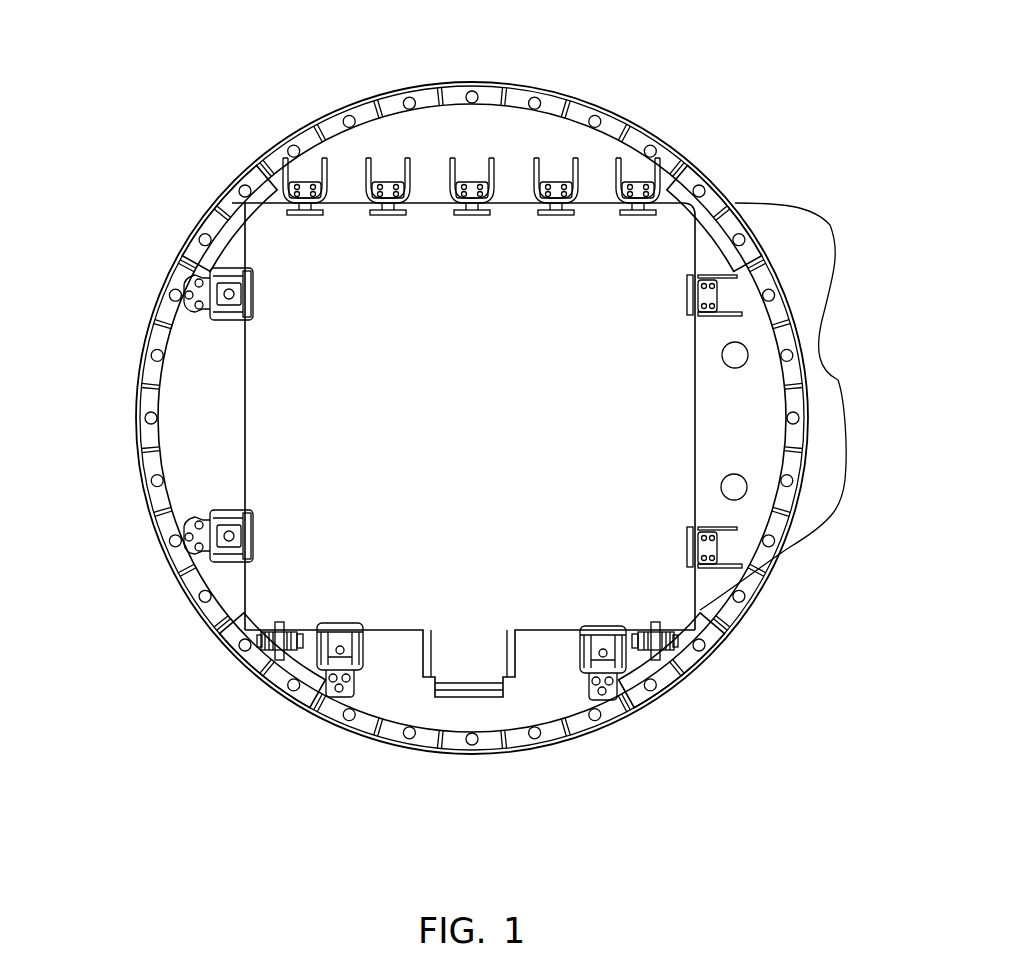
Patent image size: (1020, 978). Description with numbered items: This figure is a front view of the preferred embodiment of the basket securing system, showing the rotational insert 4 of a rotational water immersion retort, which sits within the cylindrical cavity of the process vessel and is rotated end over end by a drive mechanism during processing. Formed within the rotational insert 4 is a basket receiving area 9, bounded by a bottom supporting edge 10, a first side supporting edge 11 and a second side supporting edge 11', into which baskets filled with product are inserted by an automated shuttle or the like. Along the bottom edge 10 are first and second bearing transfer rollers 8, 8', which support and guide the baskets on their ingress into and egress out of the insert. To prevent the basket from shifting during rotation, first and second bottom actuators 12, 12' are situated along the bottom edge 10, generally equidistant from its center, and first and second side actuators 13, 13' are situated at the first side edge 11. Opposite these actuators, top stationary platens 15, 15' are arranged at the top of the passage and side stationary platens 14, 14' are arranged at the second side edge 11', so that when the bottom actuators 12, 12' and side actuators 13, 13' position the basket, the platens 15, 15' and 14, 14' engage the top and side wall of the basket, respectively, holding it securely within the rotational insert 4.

The rotational insert 4 is at (666, 142).
The first bearing transfer roller 8 is at (216, 688).
The second bearing transfer roller 8' is at (692, 678).
The basket receiving area 9 is at (838, 380).
The bottom supporting edge 10 is at (447, 196).
The first side supporting edge 11 is at (143, 416).
The second side supporting edge 11' is at (653, 422).
The first bottom actuator 12 is at (341, 639).
The second bottom actuator 12' is at (602, 641).
The first side actuator 13 is at (257, 536).
The second side actuator 13' is at (259, 300).
The side stationary platen 14 is at (677, 547).
The side stationary platen 14' is at (677, 295).
The top stationary platen 15 is at (388, 223).
The top stationary platen 15' is at (595, 228).